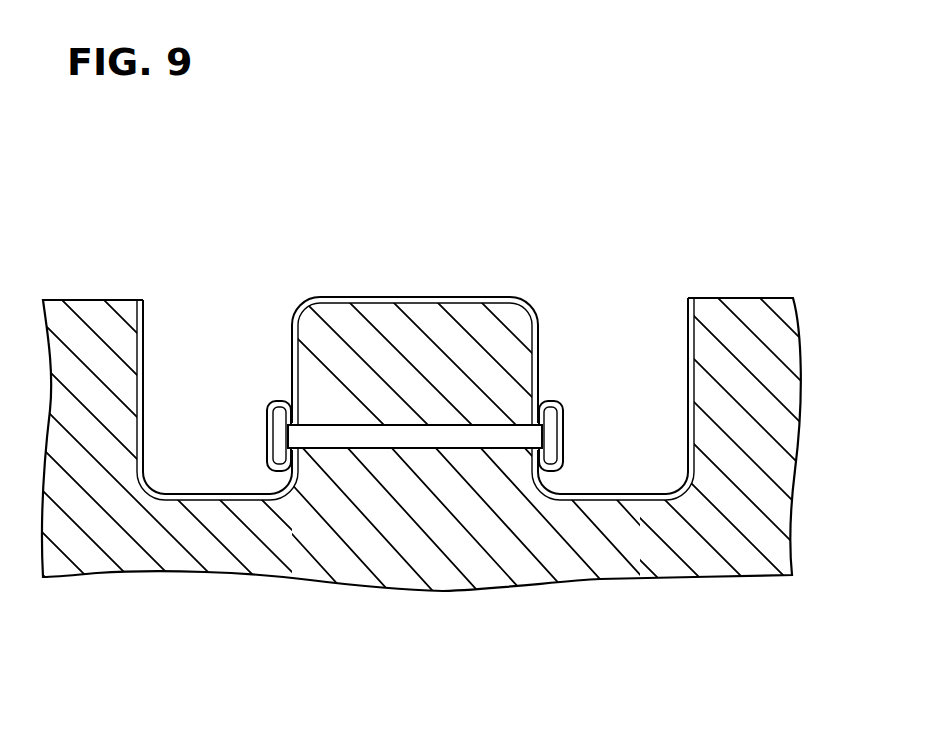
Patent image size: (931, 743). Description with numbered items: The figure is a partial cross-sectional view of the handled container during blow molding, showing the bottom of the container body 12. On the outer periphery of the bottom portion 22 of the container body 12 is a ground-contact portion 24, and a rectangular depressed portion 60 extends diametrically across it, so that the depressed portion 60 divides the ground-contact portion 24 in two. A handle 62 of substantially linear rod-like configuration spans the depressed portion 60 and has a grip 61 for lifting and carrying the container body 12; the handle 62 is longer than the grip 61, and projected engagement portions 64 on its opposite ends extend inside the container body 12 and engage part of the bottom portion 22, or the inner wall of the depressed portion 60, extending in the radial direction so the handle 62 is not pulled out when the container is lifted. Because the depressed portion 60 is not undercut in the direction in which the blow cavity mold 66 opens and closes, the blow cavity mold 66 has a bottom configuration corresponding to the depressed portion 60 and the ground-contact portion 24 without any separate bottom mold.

The container body 12 is at (700, 349).
The bottom portion 22 is at (651, 505).
The ground-contact portion 24 is at (210, 503).
The depressed portion 60 is at (528, 340).
The grip 61 is at (426, 437).
The handle 62 is at (468, 434).
The projected engagement portions 64 is at (276, 403).
The blow cavity mold 66 is at (333, 552).